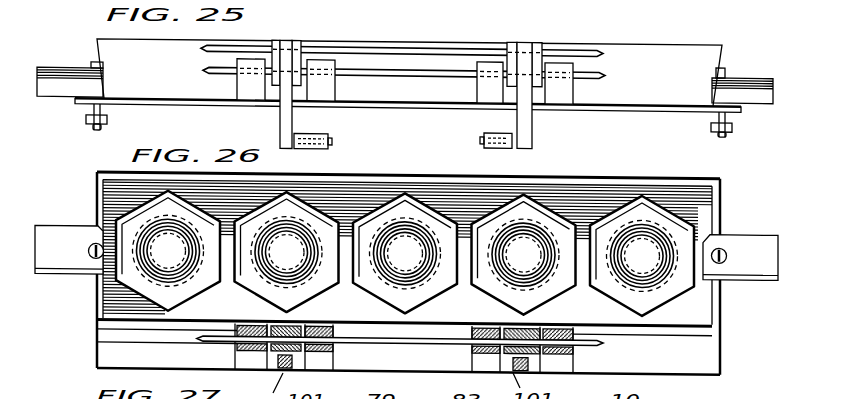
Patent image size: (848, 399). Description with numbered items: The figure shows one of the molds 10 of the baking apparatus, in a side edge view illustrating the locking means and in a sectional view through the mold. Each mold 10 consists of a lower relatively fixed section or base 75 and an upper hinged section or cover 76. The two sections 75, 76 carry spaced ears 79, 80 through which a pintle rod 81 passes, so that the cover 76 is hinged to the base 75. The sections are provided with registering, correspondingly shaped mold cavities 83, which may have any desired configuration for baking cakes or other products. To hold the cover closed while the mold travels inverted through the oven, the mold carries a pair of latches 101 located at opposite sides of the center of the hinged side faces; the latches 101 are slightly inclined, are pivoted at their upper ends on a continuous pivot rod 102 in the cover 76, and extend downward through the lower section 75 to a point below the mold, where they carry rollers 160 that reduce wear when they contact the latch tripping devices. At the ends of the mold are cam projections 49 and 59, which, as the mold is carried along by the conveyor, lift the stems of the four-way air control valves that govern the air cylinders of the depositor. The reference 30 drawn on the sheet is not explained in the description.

In FIG. 25, the mold 10 is at (410, 89).
In FIG. 26, the mold 10 is at (411, 262).
In FIG. 25, the viewing direction arrow 30 is at (268, 2).
In FIG. 25, the cam projection 49 is at (60, 53).
In FIG. 26, the cam projection 49 is at (50, 237).
In FIG. 25, the cam projection 59 is at (750, 78).
In FIG. 26, the cam projection 59 is at (740, 246).
In FIG. 25, the lower mold section 75 is at (416, 94).
In FIG. 25, the upper hinged section or cover 76 is at (398, 68).
In FIG. 25, the ear 79 is at (336, 61).
In FIG. 25, the ear 80 is at (301, 42).
In FIG. 26, the pintle rod 81 is at (388, 347).
In FIG. 26, the mold cavity 83 is at (324, 270).
In FIG. 25, the latch 101 is at (291, 121).
In FIG. 25, the pivot rod 102 is at (455, 48).
In FIG. 25, the roller 160 is at (303, 149).